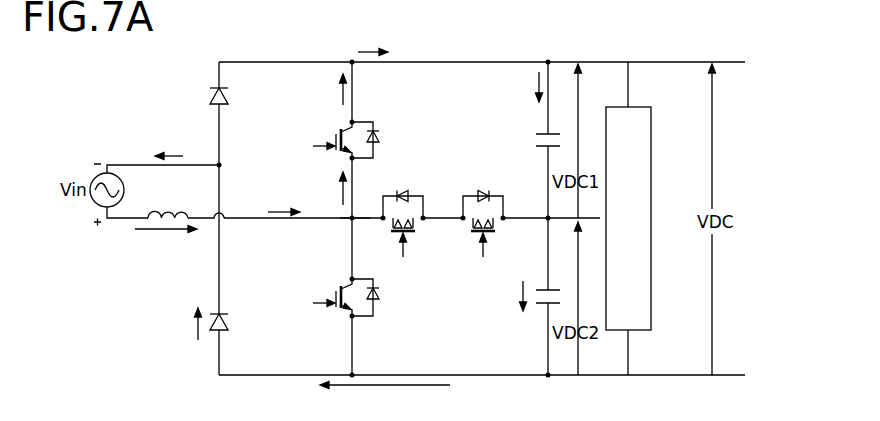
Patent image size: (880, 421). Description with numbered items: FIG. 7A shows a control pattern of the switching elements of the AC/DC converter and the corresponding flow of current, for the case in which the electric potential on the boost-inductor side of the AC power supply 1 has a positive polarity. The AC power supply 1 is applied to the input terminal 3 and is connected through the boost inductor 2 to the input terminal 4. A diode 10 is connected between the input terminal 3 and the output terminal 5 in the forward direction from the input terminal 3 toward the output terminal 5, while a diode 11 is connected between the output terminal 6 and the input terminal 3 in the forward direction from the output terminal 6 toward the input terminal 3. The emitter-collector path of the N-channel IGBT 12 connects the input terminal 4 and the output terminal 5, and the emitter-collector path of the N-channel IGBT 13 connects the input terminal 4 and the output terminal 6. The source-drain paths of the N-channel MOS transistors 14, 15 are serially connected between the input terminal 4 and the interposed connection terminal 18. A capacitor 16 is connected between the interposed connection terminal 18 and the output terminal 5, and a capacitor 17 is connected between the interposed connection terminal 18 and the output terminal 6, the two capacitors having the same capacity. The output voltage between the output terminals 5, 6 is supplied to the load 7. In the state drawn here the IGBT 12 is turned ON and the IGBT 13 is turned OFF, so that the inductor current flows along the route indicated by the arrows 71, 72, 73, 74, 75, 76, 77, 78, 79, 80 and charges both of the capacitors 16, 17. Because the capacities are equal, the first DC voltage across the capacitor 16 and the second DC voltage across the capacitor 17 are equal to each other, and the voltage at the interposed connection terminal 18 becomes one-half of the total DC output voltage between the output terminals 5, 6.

The AC power supply 1 is at (124, 177).
The boost inductor 2 is at (175, 210).
The input terminal 3 is at (228, 165).
The input terminal 4 is at (357, 211).
The output terminal 5 is at (550, 58).
The output terminal 6 is at (548, 380).
The load 7 is at (654, 180).
The diode 10 is at (229, 94).
The diode 11 is at (229, 320).
The N-channel IGBT 12 is at (341, 154).
The N-channel IGBT 13 is at (341, 311).
The N-channel MOS transistor 14 is at (418, 231).
The N-channel MOS transistor 15 is at (467, 232).
The capacitor 16 is at (536, 140).
The capacitor 17 is at (540, 289).
The interposed connection terminal 18 is at (545, 217).
The arrow 71 is at (150, 232).
The arrow 72 is at (279, 210).
The arrow 73 is at (340, 194).
The arrow 74 is at (340, 95).
The arrow 75 is at (392, 50).
The arrow 76 is at (536, 88).
The arrow 77 is at (520, 300).
The arrow 78 is at (388, 388).
The arrow 79 is at (195, 324).
The arrow 80 is at (169, 152).